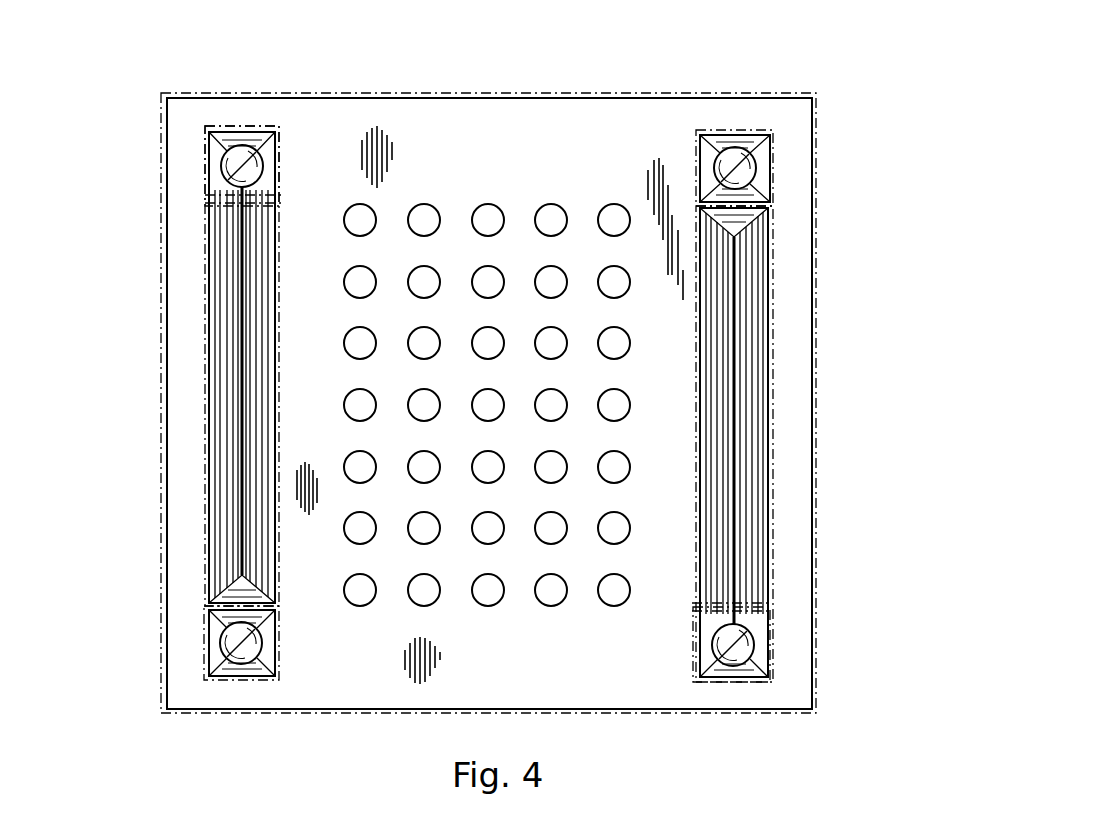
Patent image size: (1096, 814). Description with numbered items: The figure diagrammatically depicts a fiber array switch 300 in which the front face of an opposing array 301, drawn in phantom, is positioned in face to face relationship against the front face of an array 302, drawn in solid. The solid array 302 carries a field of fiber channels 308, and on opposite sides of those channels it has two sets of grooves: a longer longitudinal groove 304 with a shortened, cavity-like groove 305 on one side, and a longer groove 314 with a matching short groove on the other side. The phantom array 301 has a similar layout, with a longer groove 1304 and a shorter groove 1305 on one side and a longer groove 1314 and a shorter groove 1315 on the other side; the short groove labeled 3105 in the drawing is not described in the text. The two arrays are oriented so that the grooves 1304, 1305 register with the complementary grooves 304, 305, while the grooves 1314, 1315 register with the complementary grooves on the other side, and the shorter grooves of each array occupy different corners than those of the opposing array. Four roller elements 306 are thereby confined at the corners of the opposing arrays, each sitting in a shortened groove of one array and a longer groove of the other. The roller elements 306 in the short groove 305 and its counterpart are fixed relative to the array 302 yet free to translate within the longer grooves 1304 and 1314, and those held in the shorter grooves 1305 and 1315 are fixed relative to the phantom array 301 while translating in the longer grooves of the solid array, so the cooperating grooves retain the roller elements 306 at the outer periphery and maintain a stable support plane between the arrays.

The fiber array switch 300 is at (658, 68).
The opposing array 301 is at (660, 714).
The array 302 is at (526, 675).
The longer longitudinal groove 304 is at (776, 405).
The shortened groove 305 is at (733, 134).
The roller element 306 is at (235, 160).
The fiber channels 308 is at (502, 211).
The longer groove 314 is at (215, 480).
The longer groove 1304 is at (762, 310).
The shorter groove 1305 is at (775, 655).
The longer groove 1314 is at (204, 362).
The shorter groove 1315 is at (226, 128).
The ball block outline 3105 is at (247, 683).